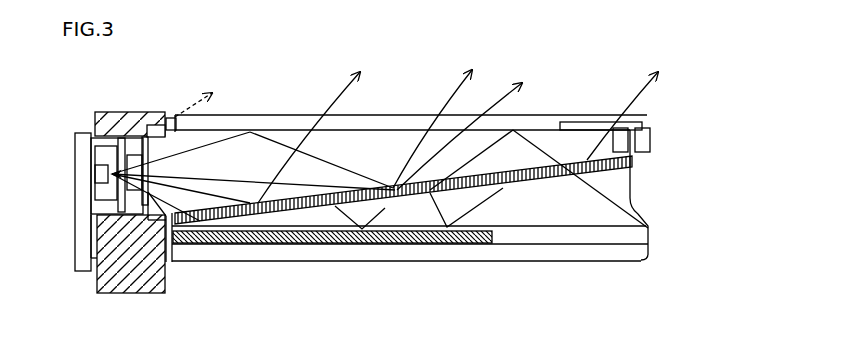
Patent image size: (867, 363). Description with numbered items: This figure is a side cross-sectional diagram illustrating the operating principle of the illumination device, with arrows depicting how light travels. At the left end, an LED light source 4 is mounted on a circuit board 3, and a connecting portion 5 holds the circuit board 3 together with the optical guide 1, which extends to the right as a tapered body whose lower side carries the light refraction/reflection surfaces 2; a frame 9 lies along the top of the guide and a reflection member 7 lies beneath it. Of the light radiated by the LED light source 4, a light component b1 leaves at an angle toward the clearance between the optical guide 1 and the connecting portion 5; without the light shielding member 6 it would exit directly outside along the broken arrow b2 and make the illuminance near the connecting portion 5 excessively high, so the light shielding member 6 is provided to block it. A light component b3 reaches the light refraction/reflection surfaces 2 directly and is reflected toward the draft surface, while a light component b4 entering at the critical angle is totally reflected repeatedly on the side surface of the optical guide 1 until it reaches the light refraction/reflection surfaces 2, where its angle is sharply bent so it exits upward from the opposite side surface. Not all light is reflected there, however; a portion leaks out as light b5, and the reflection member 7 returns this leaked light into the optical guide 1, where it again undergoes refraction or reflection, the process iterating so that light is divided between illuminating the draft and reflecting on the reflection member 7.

The optical guide 1 is at (530, 143).
The light refraction/reflection surfaces 2 is at (648, 228).
The circuit board 3 is at (74, 203).
The LED light source 4 is at (97, 135).
The connecting portion 5 is at (137, 294).
The light shielding member 6 is at (160, 226).
The reflection member 7 is at (260, 247).
The frame 9 is at (597, 112).
The light component b1 is at (130, 170).
The broken arrow b2 is at (192, 112).
The light component b3 is at (328, 103).
The light component b4 is at (445, 97).
The leaked light b5 is at (652, 82).